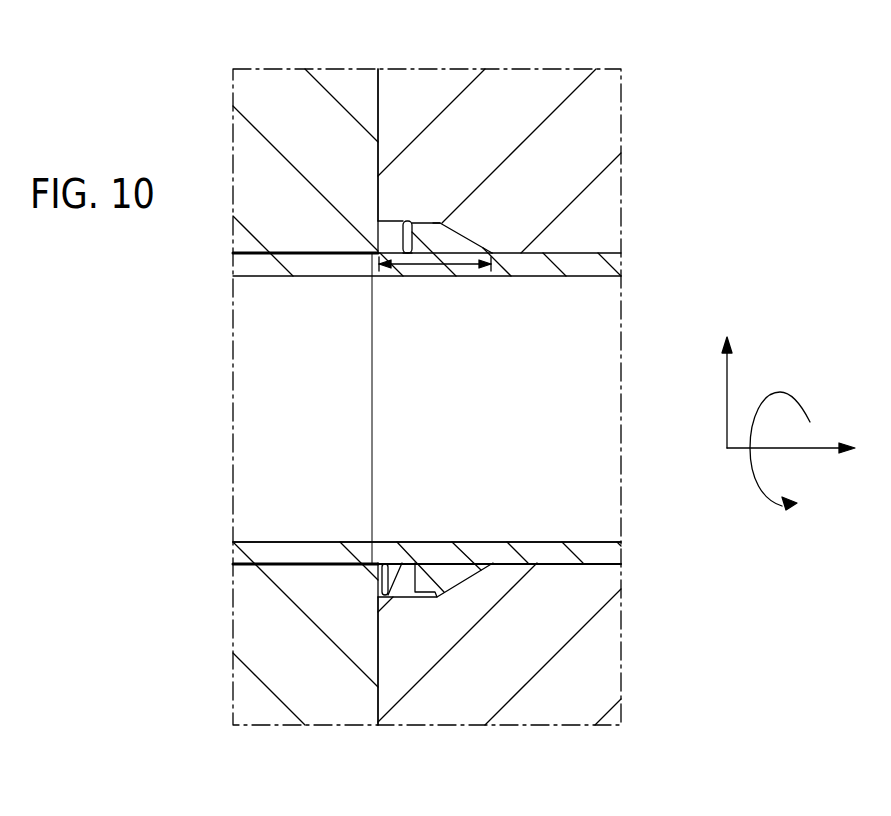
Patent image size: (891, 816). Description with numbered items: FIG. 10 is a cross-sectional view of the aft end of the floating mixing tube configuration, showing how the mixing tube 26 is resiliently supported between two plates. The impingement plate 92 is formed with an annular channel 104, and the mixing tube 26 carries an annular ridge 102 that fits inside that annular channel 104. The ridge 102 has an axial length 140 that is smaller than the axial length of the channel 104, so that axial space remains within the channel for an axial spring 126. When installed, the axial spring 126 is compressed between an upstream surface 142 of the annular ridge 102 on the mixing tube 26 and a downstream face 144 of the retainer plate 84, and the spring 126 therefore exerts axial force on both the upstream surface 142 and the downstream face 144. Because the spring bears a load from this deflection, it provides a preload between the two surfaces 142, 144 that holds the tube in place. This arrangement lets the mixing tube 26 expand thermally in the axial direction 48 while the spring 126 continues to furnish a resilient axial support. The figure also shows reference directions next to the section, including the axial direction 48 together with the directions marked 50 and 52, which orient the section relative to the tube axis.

The retainer plate 84 is at (278, 82).
The impingement plate 92 is at (523, 82).
The downstream face of the retainer plate 144 is at (378, 101).
The annular channel 104 is at (388, 227).
The axial spring 126 is at (443, 221).
The annular ridge 102 is at (463, 245).
The upstream surface of the annular ridge 142 is at (412, 250).
The axial length 140 is at (428, 265).
The mixing tube 26 is at (590, 547).
The axial direction 50 is at (728, 398).
The axial direction 48 is at (785, 452).
The rotational direction 52 is at (750, 472).